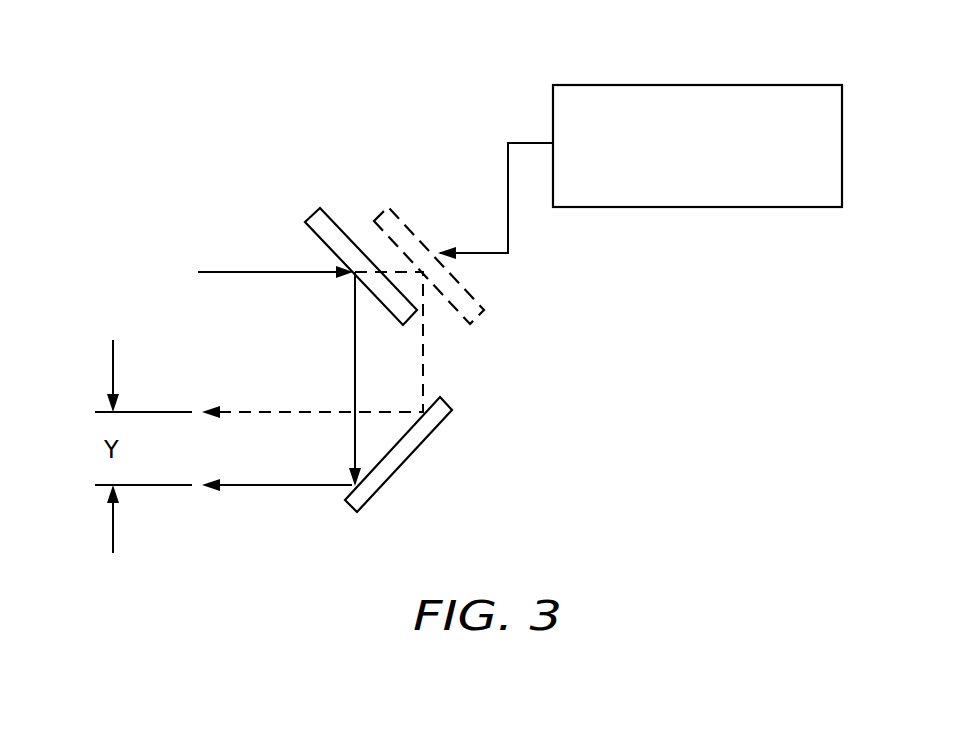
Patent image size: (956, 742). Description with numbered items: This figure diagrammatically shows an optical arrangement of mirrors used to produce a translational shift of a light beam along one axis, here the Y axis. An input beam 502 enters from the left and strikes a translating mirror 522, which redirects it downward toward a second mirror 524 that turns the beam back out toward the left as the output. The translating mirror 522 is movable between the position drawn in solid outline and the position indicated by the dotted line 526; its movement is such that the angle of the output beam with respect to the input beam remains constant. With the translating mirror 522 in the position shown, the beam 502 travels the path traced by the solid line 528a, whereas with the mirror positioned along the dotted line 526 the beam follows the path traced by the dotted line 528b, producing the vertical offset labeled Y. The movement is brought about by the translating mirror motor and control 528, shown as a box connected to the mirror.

The beam 502 is at (210, 271).
The translating mirror 522 is at (321, 206).
The second mirror 524 is at (402, 463).
The dotted line 526 is at (483, 306).
The translating mirror motor and control 528 is at (687, 207).
The solid line 528a is at (352, 339).
The dotted line 528b is at (424, 343).